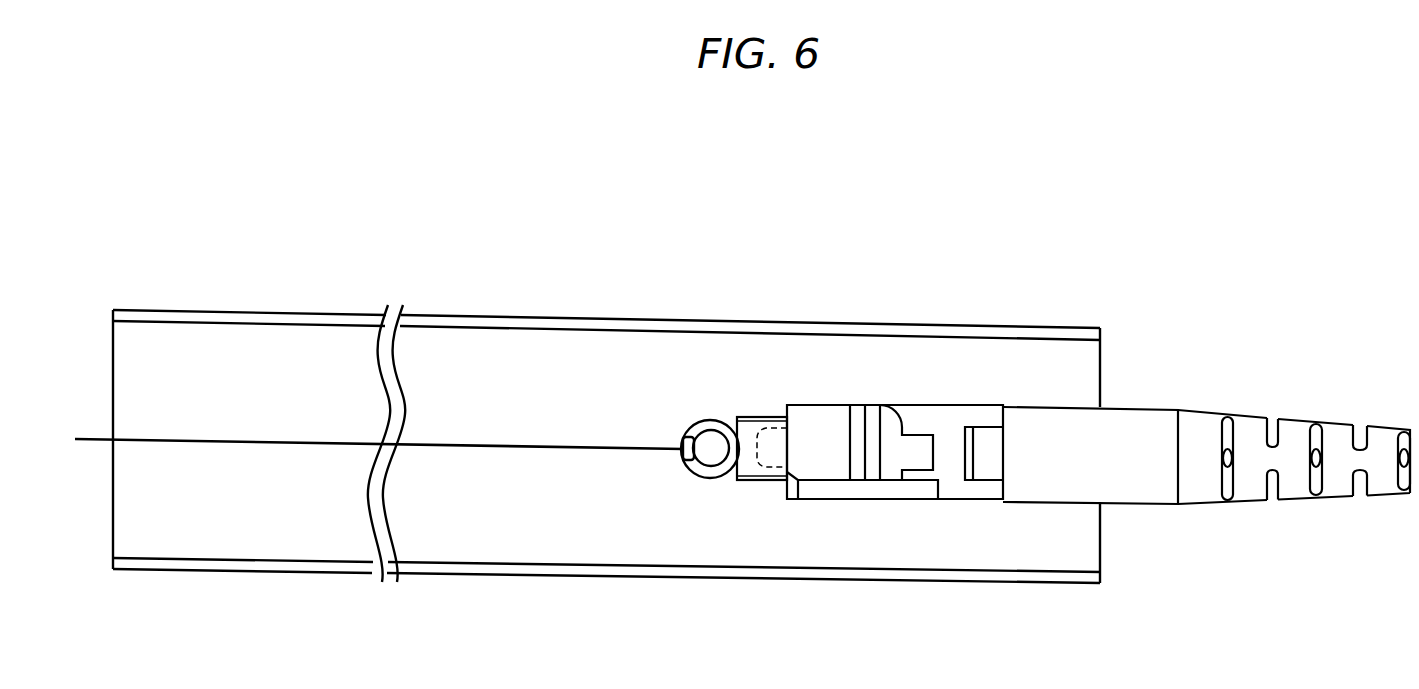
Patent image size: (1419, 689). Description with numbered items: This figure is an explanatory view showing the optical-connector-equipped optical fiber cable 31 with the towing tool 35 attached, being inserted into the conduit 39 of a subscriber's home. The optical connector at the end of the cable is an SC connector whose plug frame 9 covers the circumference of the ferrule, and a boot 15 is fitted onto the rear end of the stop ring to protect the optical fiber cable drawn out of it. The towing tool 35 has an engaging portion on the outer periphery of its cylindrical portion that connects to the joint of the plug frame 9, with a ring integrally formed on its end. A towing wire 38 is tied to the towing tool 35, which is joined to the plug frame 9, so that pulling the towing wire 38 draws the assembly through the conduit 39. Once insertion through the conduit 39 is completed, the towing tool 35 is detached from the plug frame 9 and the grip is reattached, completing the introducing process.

The plug frame 9 is at (953, 498).
The boot 15 is at (1252, 492).
The optical-connector-equipped optical fiber cable 31 is at (1156, 403).
The towing tool 35 is at (720, 480).
The towing wire 38 is at (518, 443).
The conduit 39 is at (918, 326).